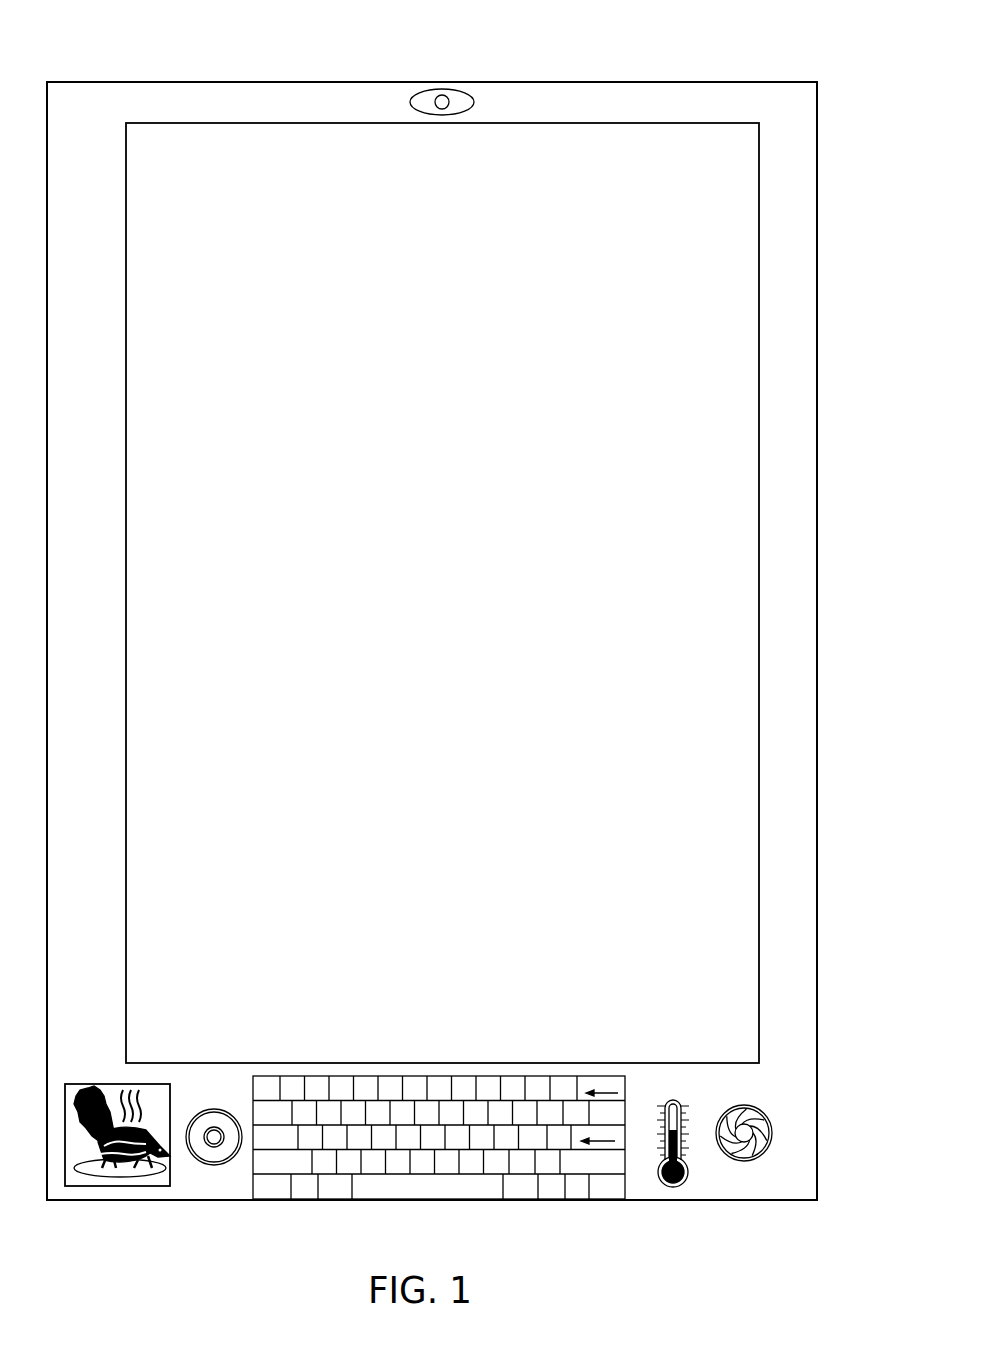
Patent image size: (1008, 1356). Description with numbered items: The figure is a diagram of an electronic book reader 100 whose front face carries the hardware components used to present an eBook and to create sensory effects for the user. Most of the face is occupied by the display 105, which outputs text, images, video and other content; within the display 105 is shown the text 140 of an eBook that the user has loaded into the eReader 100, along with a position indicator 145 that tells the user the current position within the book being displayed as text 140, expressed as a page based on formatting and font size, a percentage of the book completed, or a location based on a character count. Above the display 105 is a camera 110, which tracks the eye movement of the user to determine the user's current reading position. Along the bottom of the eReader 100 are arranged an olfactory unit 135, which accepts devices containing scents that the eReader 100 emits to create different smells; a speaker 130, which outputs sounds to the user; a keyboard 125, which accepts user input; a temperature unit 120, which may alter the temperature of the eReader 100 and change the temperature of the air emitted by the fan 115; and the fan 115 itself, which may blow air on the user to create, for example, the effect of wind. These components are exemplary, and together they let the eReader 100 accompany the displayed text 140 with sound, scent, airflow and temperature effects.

The electronic book reader 100 is at (744, 83).
The display 105 is at (759, 532).
The camera 110 is at (449, 91).
The fan 115 is at (772, 1114).
The temperature unit 120 is at (688, 1188).
The keyboard 125 is at (523, 1200).
The speaker 130 is at (212, 1166).
The olfactory unit 135 is at (141, 1187).
The text 140 is at (255, 420).
The position indicator 145 is at (405, 623).